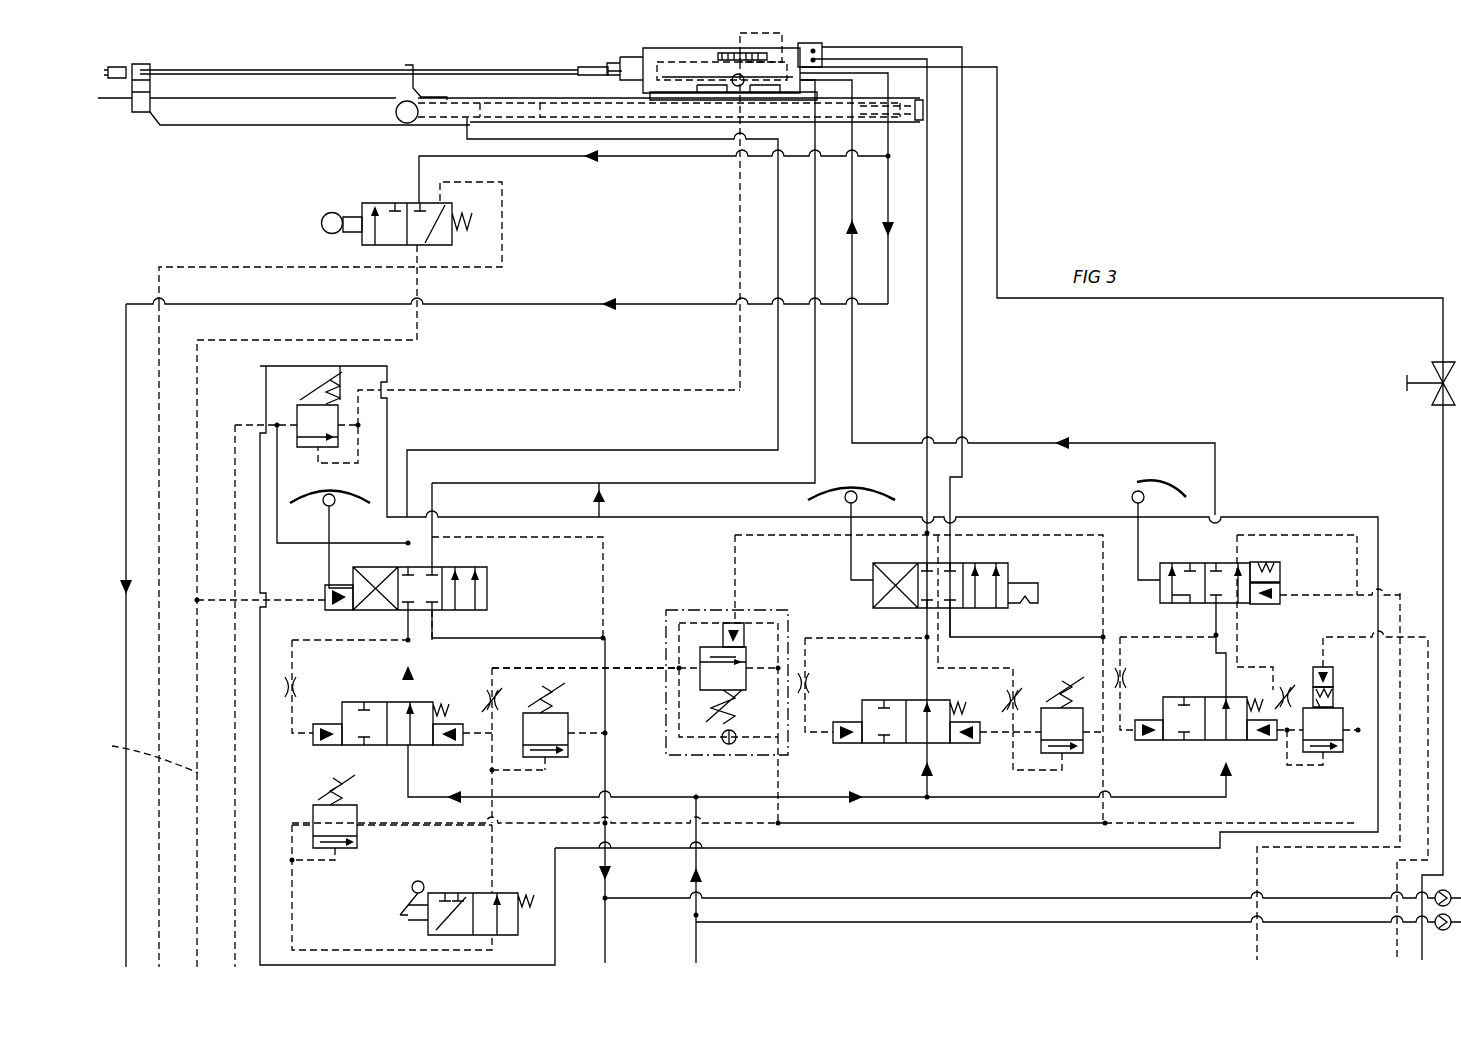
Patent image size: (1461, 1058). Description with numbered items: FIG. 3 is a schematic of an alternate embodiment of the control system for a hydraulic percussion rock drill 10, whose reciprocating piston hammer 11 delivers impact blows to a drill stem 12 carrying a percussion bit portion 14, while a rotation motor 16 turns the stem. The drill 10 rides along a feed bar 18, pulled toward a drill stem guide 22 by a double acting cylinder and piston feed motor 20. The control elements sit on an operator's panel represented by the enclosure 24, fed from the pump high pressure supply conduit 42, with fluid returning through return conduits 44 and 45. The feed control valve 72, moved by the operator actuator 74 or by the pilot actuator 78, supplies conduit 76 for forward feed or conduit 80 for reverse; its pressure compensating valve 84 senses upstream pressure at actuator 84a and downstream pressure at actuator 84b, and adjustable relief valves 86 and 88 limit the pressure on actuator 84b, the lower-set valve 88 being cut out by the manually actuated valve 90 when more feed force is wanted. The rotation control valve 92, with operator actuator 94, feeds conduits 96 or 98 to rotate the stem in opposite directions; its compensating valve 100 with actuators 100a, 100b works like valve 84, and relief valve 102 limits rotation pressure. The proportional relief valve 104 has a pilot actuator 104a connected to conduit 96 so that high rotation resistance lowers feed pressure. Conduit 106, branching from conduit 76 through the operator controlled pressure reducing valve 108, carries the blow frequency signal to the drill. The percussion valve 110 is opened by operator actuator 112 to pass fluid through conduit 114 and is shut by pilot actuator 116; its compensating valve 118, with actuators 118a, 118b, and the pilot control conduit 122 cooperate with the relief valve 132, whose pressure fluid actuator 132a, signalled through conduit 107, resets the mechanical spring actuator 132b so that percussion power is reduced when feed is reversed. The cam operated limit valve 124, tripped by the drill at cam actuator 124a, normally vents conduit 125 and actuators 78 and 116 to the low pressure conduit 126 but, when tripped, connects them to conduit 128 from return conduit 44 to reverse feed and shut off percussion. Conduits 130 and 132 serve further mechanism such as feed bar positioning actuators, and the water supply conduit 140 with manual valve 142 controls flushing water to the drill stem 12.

The hydraulic percussion rock drill 10 is at (618, 47).
The reciprocating piston hammer 11 is at (724, 52).
The drill stem 12 is at (306, 70).
The percussion bit portion 14 is at (118, 67).
The pressure fluid operated motor 16 is at (808, 44).
The feed bar 18 is at (205, 126).
The hydraulic cylinder and piston motor 20 is at (636, 120).
The drill stem guide 22 is at (150, 84).
The enclosure 24 is at (599, 483).
The high pressure supply conduit 42 is at (700, 940).
The drill percussion motor fluid return conduit 44 is at (126, 456).
The fluid return conduit 45 is at (606, 940).
The feed control valve 72 is at (466, 567).
The operator controlled actuator 74 is at (333, 516).
The forward feed conduit 76 is at (594, 450).
The pilot actuator 78 is at (332, 610).
The reverse feed conduit 80 is at (678, 483).
The pressure compensating valve 84 is at (380, 702).
The valve actuator 84a is at (333, 745).
The valve actuator 84b is at (436, 745).
The adjustable pressure relief valve 86 is at (556, 694).
The adjustable pressure relief valve 88 is at (357, 814).
The manually actuated valve 90 is at (468, 893).
The rotation motor control valve 92 is at (988, 563).
The operator controlled actuator 94 is at (848, 552).
The rotation conduit 96 is at (927, 370).
The rotation conduit 98 is at (962, 370).
The pressure compensation valve 100 is at (887, 700).
The solenoid 100a is at (840, 743).
The solenoid 100b is at (960, 743).
The adjustable pressure relief valve 102 is at (1079, 753).
The proportional pressure relief valve 104 is at (683, 610).
The pilot pressure fluid actuator 104a is at (747, 640).
The conduit 106 is at (524, 390).
The conduit 107 is at (233, 440).
The pressure reducing valve 108 is at (340, 366).
The manually controllable valve 110 is at (1170, 603).
The operator controlled actuator 112 is at (1140, 536).
The conduit 114 is at (1132, 443).
The pilot pressure fluid controlled actuator 116 is at (1282, 592).
The pressure compensating valve 118 is at (1195, 697).
The solenoid 118a is at (1150, 740).
The pressure compensator control valve actuator 118b is at (1270, 740).
The pilot control conduit 122 is at (1273, 668).
The cam operated valve 124 is at (397, 203).
The cam actuator 124a is at (348, 232).
The conduit 125 is at (141, 753).
The low pressure conduit 126 is at (216, 267).
The conduit 128 is at (534, 158).
The conduit 130 is at (1330, 898).
The pressure relief valve 132 is at (1328, 752).
The pressure fluid actuator 132a is at (1322, 667).
The mechanical spring actuator 132b is at (1313, 690).
The water supply conduit 140 is at (1443, 445).
The manual control valve 142 is at (1432, 365).